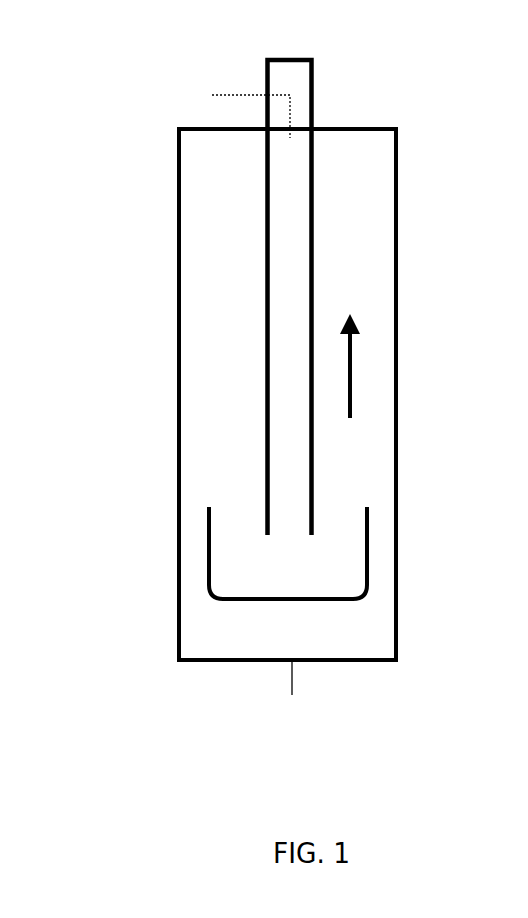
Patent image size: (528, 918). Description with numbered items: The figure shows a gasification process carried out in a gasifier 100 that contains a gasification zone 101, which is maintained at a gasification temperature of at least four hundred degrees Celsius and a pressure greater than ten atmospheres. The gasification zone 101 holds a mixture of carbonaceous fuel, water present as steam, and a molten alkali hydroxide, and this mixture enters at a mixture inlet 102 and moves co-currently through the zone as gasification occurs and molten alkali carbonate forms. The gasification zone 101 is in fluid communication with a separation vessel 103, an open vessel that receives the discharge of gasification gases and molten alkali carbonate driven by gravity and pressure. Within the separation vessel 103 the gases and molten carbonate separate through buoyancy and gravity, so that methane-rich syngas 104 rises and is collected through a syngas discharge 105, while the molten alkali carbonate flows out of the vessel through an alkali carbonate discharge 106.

The gasifier 100 is at (118, 93).
The gasification zone 101 is at (292, 175).
The mixture inlet 102 is at (235, 92).
The separation vessel 103 is at (370, 543).
The methane-rich syngas 104 is at (352, 372).
The syngas discharge 105 is at (398, 208).
The alkali carbonate discharge 106 is at (292, 695).